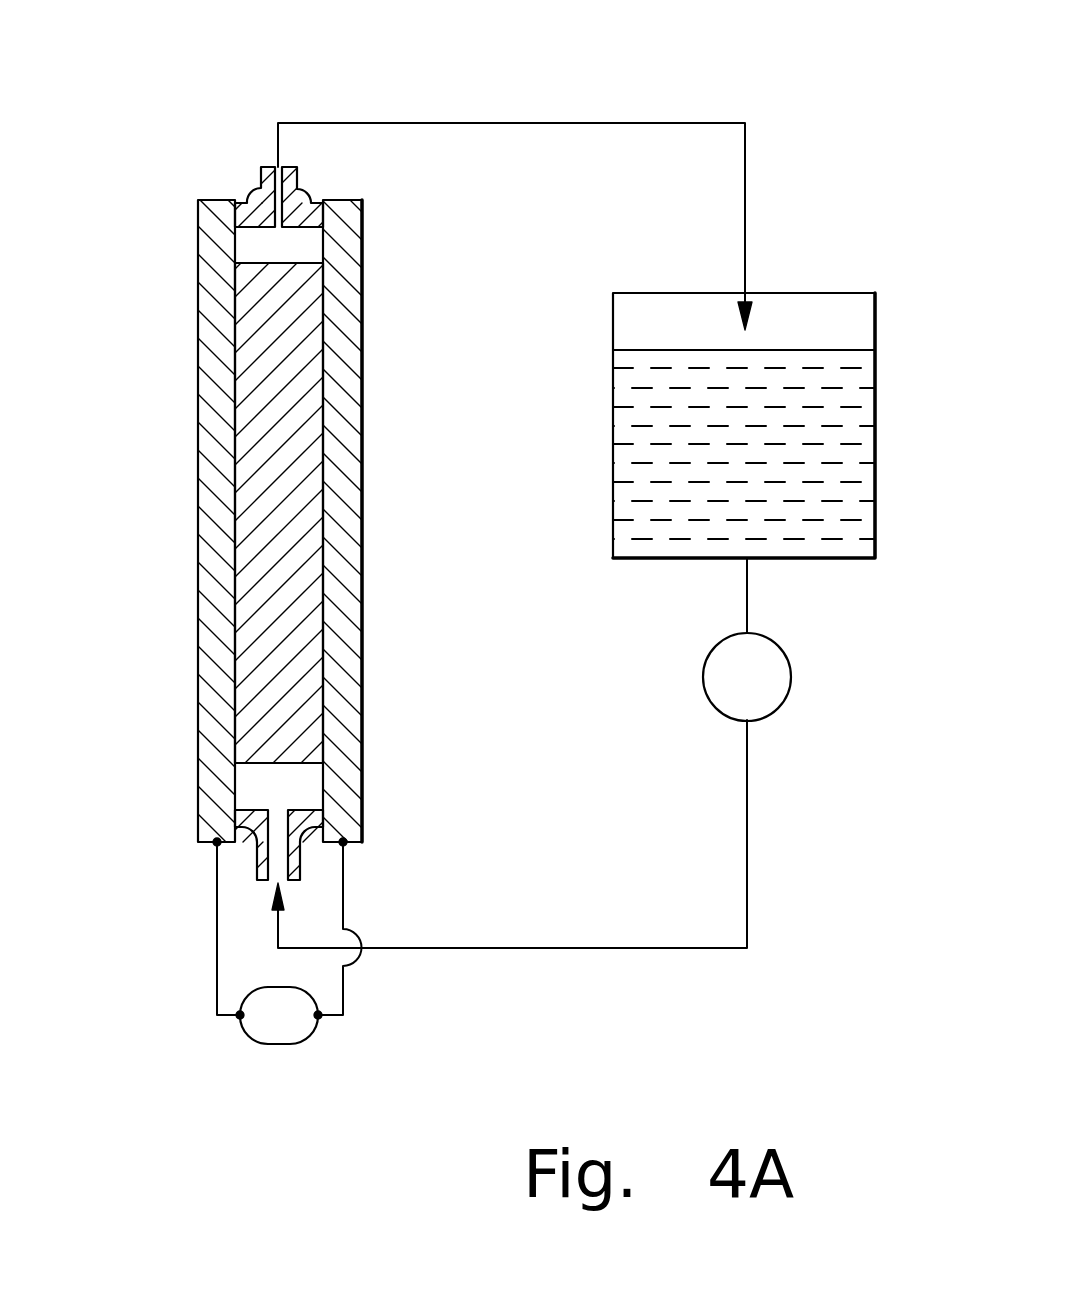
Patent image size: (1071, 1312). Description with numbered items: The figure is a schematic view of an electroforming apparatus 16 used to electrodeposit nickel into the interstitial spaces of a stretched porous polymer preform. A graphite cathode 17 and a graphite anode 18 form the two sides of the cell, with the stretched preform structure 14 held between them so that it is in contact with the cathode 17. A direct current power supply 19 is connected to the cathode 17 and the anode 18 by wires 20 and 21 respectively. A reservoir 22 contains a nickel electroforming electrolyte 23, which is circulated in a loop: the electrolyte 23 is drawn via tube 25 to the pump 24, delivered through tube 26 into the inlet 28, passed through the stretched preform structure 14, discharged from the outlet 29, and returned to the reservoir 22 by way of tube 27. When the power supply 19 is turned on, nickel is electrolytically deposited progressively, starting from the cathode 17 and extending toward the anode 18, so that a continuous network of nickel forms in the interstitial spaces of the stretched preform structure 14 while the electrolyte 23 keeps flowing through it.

The electroforming apparatus 16 is at (151, 104).
The stretched preform structure 14 is at (243, 440).
The graphite cathode 17 is at (201, 616).
The graphite anode 18 is at (355, 528).
The direct current power supply 19 is at (281, 1034).
The wire 20 is at (217, 958).
The wire 21 is at (343, 980).
The reservoir 22 is at (876, 510).
The nickel electroforming electrolyte 23 is at (857, 475).
The pump 24 is at (781, 690).
The tube 25 is at (747, 590).
The tube 26 is at (747, 863).
The tube 27 is at (745, 180).
The inlet 28 is at (301, 862).
The outlet 29 is at (288, 188).